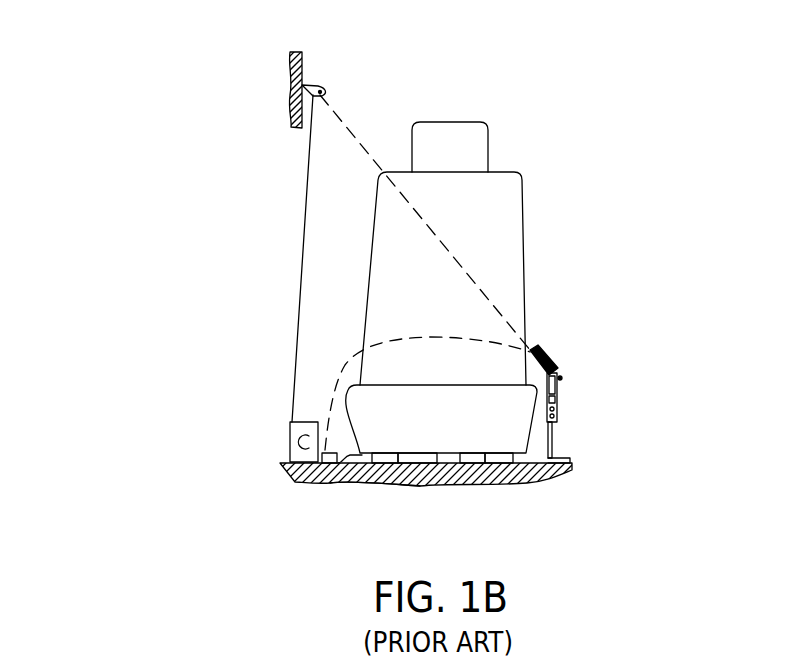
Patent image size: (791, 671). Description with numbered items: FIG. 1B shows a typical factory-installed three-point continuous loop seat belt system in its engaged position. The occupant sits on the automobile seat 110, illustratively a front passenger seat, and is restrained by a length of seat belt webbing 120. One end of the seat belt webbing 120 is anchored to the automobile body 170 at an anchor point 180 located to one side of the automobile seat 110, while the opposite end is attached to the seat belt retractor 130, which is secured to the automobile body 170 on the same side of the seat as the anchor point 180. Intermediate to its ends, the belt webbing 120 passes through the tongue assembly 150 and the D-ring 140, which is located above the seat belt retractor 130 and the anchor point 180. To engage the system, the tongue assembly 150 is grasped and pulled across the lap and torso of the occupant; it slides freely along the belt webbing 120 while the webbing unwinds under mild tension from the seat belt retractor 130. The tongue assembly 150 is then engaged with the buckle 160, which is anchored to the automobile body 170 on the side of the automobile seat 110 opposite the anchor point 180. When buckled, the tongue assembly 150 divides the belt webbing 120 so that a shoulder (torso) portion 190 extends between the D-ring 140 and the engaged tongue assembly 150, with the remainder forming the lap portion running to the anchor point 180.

The automobile seat 110 is at (503, 188).
The seat belt webbing 120 is at (303, 268).
The seat belt retractor 130 is at (290, 425).
The D-ring 140 is at (316, 70).
The tongue assembly 150 is at (551, 363).
The buckle 160 is at (560, 410).
The automobile body 170 is at (293, 478).
The anchor point 180 is at (367, 480).
The shoulder (torso) portion 190 is at (460, 262).